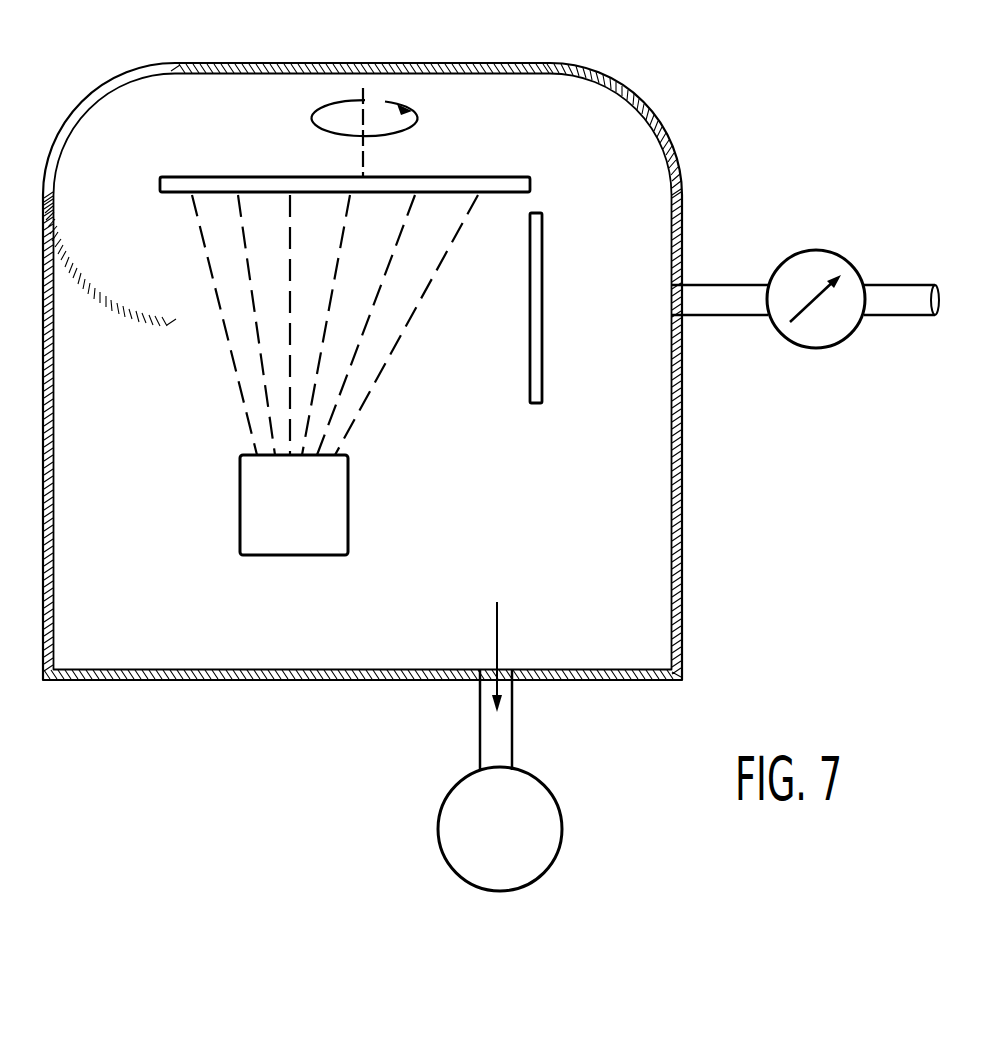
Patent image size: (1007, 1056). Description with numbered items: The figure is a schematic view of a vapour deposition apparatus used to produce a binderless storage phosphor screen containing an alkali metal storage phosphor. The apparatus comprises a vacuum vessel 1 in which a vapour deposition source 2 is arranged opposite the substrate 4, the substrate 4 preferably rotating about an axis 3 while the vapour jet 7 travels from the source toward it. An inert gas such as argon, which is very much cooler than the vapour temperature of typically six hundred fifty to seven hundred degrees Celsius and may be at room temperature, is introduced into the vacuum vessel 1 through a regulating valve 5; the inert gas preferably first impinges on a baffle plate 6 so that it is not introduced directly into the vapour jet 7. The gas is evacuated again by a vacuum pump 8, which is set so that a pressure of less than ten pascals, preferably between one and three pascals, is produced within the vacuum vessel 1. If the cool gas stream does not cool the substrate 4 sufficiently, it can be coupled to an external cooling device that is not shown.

The vacuum vessel 1 is at (685, 560).
The vapour deposition source 2 is at (248, 530).
The axis 3 is at (363, 95).
The substrate 4 is at (490, 178).
The regulating valve 5 is at (835, 262).
The baffle plate 6 is at (543, 388).
The vapour jet 7 is at (240, 345).
The vacuum pump 8 is at (545, 836).